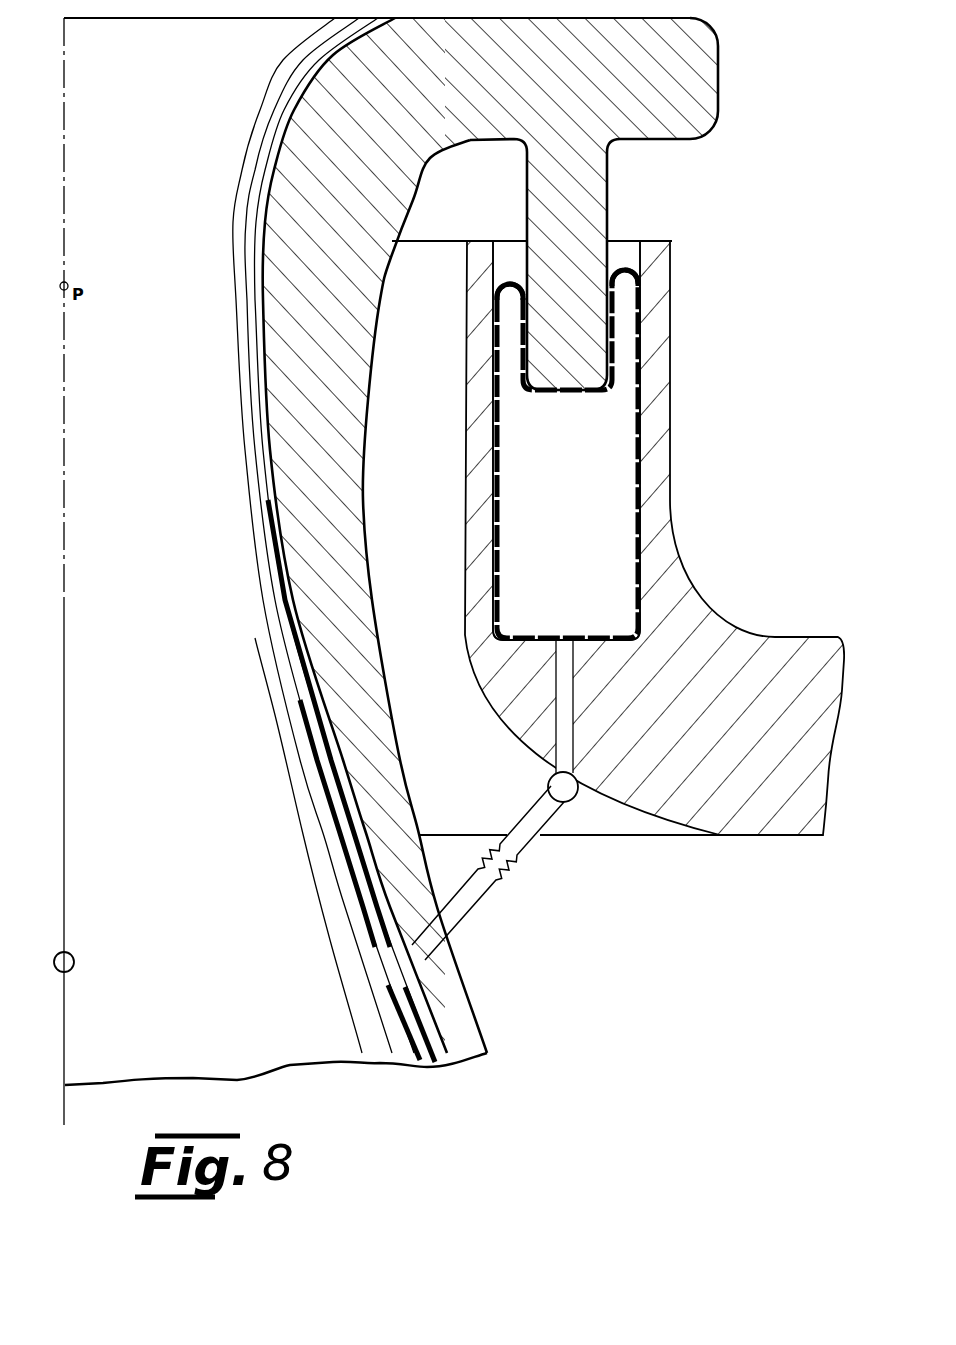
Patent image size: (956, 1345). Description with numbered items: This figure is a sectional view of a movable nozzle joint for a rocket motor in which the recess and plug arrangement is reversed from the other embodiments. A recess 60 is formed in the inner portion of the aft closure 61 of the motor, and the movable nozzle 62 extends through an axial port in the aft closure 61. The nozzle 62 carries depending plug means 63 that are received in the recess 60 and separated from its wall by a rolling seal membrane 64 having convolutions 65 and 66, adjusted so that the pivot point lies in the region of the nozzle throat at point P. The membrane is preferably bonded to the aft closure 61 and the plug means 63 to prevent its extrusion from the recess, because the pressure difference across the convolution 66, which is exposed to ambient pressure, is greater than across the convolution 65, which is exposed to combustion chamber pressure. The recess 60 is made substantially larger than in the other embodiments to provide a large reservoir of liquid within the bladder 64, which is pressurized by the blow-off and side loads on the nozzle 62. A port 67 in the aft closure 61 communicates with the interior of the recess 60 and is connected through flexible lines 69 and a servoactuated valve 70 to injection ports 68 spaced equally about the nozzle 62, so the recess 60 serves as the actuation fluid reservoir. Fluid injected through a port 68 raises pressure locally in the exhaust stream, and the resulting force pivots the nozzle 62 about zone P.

The recess 60 is at (576, 564).
The aft closure 61 is at (723, 741).
The movable nozzle 62 is at (326, 448).
The plug means 63 is at (582, 284).
The rolling seal membrane 64 is at (640, 510).
The convolution 65 is at (622, 268).
The convolution 66 is at (513, 280).
The port 67 is at (556, 770).
The ports 68 is at (412, 961).
The flexible lines 69 is at (503, 877).
The servoactuated valve 70 is at (572, 797).